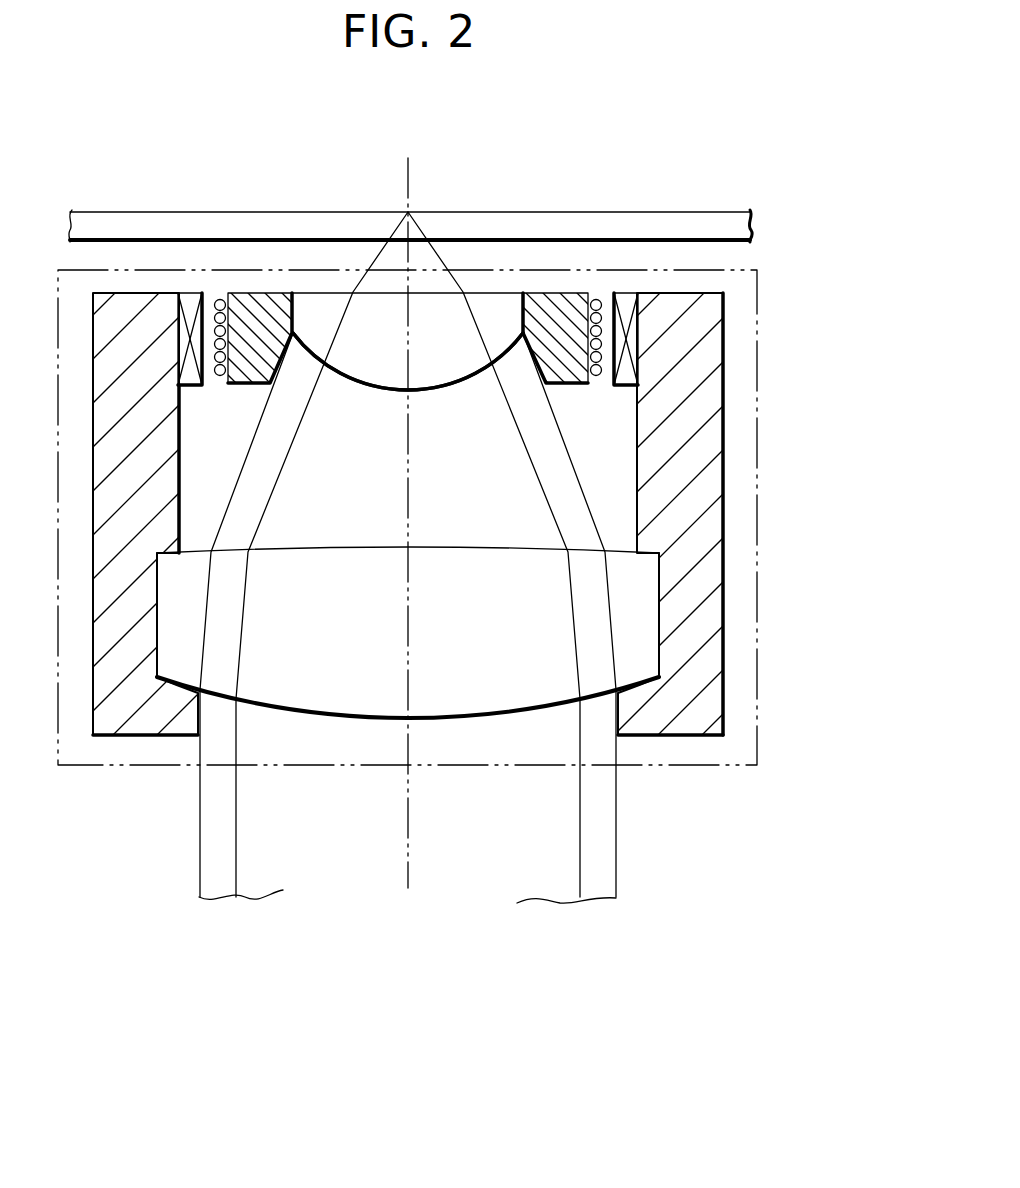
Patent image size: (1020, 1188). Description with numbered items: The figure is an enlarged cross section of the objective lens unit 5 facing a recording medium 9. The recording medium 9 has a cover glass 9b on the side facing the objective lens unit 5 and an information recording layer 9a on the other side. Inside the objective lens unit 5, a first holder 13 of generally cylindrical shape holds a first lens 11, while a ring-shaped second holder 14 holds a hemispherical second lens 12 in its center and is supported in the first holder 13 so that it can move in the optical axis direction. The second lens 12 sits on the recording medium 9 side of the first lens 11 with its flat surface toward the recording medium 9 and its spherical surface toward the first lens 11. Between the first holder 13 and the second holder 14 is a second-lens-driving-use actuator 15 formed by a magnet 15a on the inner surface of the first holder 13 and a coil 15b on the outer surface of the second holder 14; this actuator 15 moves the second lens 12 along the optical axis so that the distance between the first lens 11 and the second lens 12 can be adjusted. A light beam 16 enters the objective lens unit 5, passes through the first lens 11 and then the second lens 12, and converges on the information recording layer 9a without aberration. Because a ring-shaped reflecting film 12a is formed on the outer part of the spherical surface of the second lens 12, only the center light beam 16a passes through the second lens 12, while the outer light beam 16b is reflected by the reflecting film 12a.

The objective lens unit 5 is at (762, 478).
The recording medium 9 is at (637, 220).
The information recording layer 9a is at (712, 208).
The cover glass 9b is at (735, 243).
The first lens 11 is at (642, 666).
The second lens 12 is at (500, 300).
The reflecting film 12a is at (307, 355).
The first holder 13 is at (708, 562).
The second holder 14 is at (573, 297).
The second-lens-driving-use actuator 15 is at (374, 275).
The magnet 15a is at (188, 292).
The coil 15b is at (225, 293).
The light beam 16 is at (463, 605).
The center light beam 16a is at (552, 878).
The outer light beam 16b is at (600, 885).